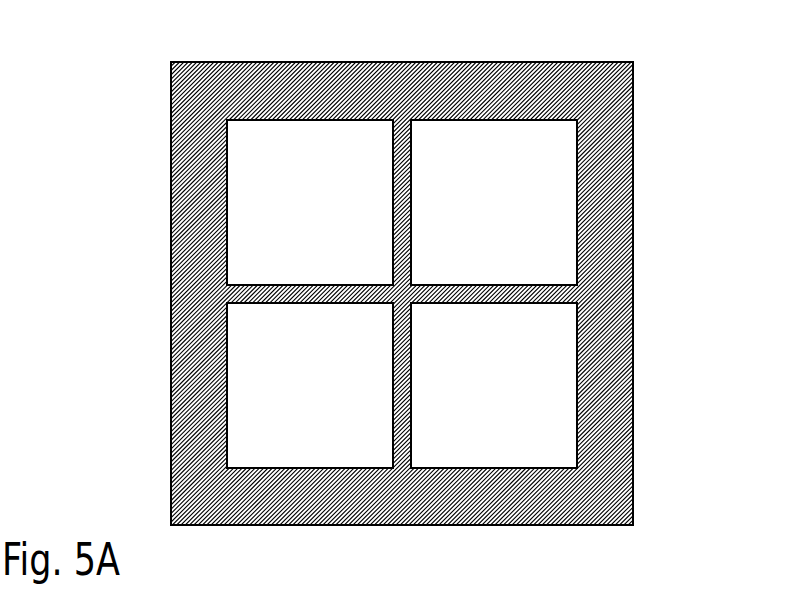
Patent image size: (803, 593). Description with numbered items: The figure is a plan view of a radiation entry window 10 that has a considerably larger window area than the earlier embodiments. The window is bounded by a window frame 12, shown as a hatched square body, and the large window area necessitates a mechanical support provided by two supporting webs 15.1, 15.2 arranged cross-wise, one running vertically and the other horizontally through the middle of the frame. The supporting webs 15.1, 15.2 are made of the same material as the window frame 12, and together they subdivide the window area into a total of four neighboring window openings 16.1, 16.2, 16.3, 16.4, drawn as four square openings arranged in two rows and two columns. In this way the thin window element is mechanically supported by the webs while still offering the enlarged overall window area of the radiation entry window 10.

The radiation entry window 10 is at (115, 266).
The window frame 12 is at (200, 218).
The supporting web 15.1 is at (403, 158).
The supporting web 15.2 is at (293, 290).
The window opening 16.1 is at (262, 172).
The window opening 16.2 is at (553, 152).
The window opening 16.3 is at (243, 416).
The window opening 16.4 is at (558, 397).